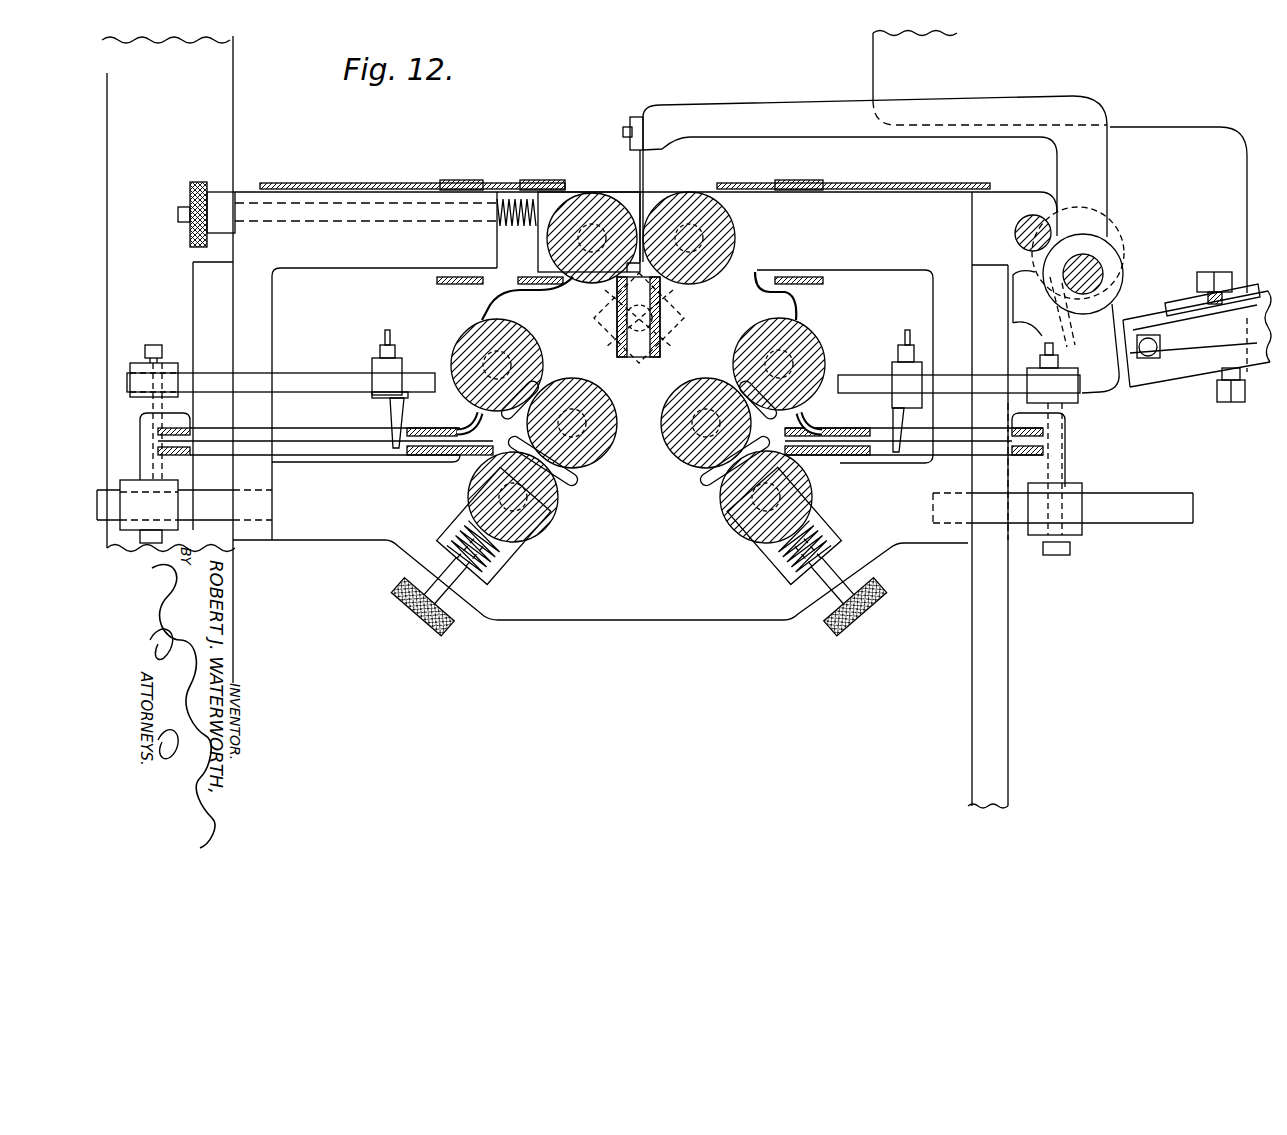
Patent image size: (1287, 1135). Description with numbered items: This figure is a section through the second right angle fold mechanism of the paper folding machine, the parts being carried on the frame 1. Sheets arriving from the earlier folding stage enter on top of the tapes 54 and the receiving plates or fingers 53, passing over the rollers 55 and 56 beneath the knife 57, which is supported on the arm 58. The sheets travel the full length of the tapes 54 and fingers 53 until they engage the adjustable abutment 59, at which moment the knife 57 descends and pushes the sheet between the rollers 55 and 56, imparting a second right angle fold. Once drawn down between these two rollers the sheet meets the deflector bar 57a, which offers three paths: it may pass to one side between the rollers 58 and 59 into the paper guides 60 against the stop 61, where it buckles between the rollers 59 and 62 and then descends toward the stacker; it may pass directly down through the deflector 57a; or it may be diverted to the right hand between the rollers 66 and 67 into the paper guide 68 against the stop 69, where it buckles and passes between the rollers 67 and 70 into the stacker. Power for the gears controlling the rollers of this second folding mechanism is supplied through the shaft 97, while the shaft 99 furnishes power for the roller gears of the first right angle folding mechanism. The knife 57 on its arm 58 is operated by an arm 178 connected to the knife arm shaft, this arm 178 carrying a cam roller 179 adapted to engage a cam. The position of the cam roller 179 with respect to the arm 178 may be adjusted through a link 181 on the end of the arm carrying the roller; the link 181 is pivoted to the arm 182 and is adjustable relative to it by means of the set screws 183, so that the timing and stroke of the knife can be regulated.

The frame 1 is at (232, 93).
The receiving plates or fingers 53 is at (404, 172).
The tapes 54 is at (540, 180).
The roller 55 is at (590, 195).
The roller 56 is at (694, 200).
The knife 57 is at (672, 176).
The deflector bar 57a is at (617, 321).
The arm 58 is at (752, 84).
The adjustable abutment 59 is at (587, 463).
The paper guides 60 is at (367, 413).
The stop 61 is at (402, 422).
The roller 62 is at (548, 530).
The roller 66 is at (798, 335).
The roller 67 is at (687, 466).
The paper guide 68 is at (856, 414).
The stop 69 is at (893, 410).
The roller 70 is at (725, 533).
The shaft 97 is at (1016, 224).
The shaft 99 is at (1088, 267).
The arm 178 is at (1110, 373).
The cam roller 179 is at (1247, 395).
The link 181 is at (1178, 348).
The arm 182 is at (1147, 335).
The set screws 183 is at (1213, 392).